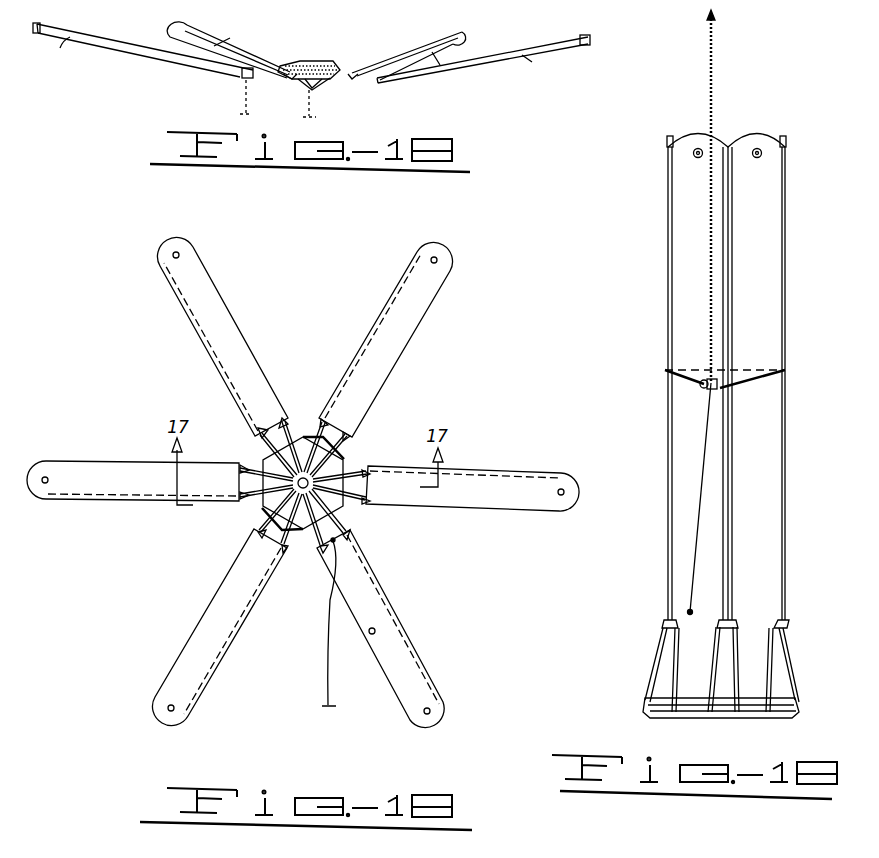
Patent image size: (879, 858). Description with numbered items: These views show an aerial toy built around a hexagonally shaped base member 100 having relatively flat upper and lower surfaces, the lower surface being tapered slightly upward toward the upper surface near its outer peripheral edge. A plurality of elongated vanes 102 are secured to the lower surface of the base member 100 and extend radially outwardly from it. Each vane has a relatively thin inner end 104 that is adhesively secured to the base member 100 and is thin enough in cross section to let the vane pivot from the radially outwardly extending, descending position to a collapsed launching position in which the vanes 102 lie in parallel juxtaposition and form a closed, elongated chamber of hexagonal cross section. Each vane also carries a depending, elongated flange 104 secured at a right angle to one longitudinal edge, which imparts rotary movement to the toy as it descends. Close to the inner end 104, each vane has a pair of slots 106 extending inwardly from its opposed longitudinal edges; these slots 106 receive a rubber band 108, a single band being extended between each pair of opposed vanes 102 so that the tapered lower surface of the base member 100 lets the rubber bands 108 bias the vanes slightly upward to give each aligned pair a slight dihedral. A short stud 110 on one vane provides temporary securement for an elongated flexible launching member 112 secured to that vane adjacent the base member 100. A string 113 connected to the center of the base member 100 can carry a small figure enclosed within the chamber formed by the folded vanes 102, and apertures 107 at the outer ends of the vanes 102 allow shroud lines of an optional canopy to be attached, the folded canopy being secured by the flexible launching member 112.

In FIG. 15, the base member 100 is at (320, 65).
In FIG. 18, the base member 100 is at (720, 712).
In FIG. 15, the vanes 102 is at (170, 30).
In FIG. 16, the vanes 102 is at (205, 274).
In FIG. 18, the vanes 102 is at (672, 280).
In FIG. 15, the inner end / depending flange 104 is at (305, 50).
In FIG. 16, the inner end / depending flange 104 is at (205, 346).
In FIG. 15, the slots 106 is at (246, 79).
In FIG. 16, the slots 106 is at (312, 420).
In FIG. 18, the slots 106 is at (662, 623).
In FIG. 16, the apertures 107 is at (172, 246).
In FIG. 18, the apertures 107 is at (697, 148).
In FIG. 15, the rubber band 108 is at (305, 60).
In FIG. 16, the rubber band 108 is at (350, 470).
In FIG. 18, the rubber band 108 is at (672, 672).
In FIG. 16, the stud 110 is at (376, 631).
In FIG. 18, the stud 110 is at (702, 386).
In FIG. 16, the flexible launching member 112 is at (328, 667).
In FIG. 18, the flexible launching member 112 is at (712, 52).
In FIG. 15, the string 113 is at (311, 96).